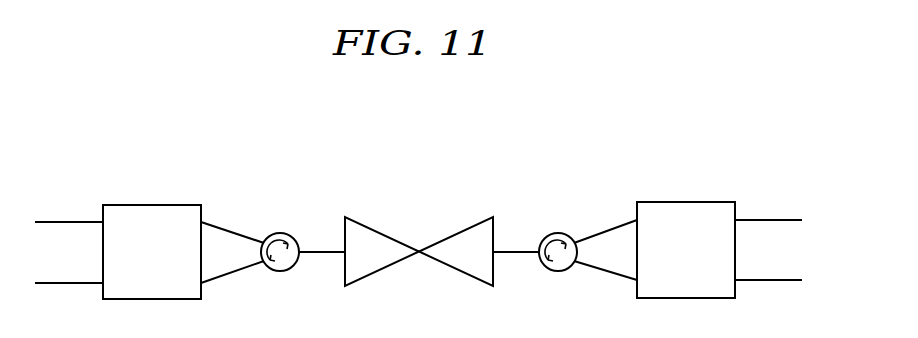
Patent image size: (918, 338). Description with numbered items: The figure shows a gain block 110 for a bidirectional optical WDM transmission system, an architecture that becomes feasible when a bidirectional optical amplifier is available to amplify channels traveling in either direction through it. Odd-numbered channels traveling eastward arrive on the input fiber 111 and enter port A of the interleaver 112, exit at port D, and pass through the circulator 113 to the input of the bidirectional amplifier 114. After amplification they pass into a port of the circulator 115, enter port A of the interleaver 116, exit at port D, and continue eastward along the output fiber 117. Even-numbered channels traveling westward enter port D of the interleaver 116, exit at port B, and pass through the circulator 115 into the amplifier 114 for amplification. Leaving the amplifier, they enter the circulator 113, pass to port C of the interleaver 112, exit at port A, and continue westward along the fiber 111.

The gain block 110 is at (427, 97).
The input fiber 111 is at (70, 222).
The interleaver 112 is at (152, 205).
The circulator 113 is at (283, 233).
The bidirectional amplifier 114 is at (472, 222).
The circulator 115 is at (560, 233).
The interleaver 116 is at (690, 202).
The output fiber 117 is at (772, 220).